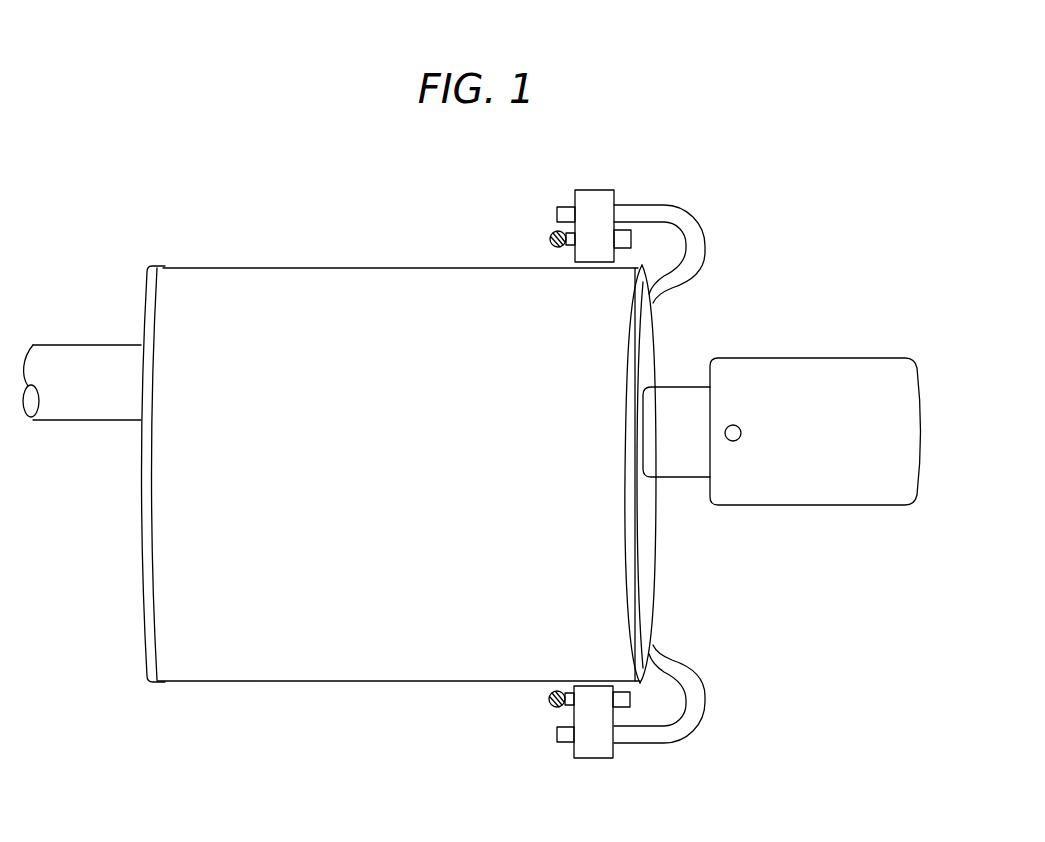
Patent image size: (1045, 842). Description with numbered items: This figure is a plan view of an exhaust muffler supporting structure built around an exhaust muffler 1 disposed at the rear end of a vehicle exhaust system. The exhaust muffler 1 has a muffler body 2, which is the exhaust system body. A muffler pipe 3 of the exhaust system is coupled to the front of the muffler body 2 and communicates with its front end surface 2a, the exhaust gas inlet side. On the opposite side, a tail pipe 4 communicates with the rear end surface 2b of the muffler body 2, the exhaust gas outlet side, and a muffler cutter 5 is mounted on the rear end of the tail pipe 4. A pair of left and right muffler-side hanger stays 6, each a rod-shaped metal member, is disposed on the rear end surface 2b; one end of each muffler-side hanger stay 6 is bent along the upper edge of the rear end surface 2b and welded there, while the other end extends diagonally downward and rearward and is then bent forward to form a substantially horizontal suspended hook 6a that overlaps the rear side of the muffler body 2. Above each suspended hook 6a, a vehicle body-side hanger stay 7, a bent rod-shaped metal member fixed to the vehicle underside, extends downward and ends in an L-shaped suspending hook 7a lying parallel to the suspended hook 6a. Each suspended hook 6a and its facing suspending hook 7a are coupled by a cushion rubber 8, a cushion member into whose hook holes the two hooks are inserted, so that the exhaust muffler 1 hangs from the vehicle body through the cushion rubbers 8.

The exhaust muffler 1 is at (809, 211).
The muffler body 2 is at (337, 280).
The front end surface 2a is at (138, 552).
The rear end surface 2b is at (655, 548).
The muffler pipe 3 is at (89, 345).
The tail pipe 4 is at (680, 398).
The muffler cutter 5 is at (813, 492).
The muffler-side hanger stay 6 is at (693, 263).
The suspended hook 6a is at (562, 208).
The vehicle body-side hanger stay 7 is at (549, 240).
The suspending hook 7a is at (622, 240).
The cushion rubber 8 is at (595, 197).